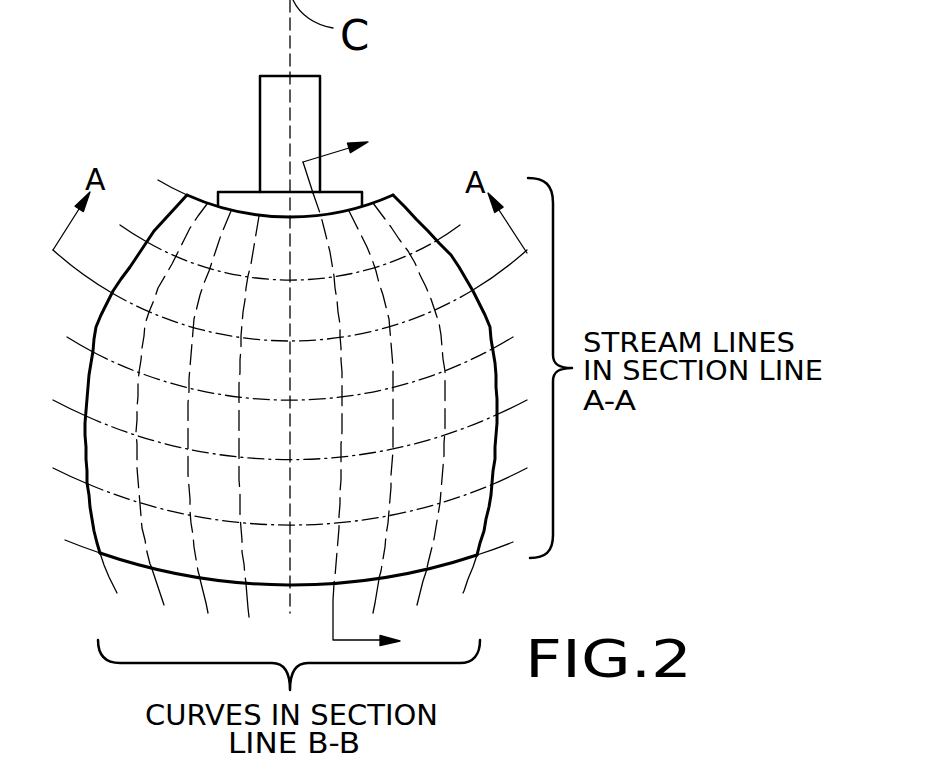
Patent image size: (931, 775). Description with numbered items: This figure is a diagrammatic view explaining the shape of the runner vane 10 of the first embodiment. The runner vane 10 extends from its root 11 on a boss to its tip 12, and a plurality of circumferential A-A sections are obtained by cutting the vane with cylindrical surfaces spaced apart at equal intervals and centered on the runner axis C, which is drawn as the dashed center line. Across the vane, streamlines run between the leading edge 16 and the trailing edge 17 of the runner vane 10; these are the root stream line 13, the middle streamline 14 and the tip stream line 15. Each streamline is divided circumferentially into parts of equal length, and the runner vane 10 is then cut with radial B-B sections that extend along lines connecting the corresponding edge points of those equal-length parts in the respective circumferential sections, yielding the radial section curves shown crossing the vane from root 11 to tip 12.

The runner vane 10 is at (467, 123).
The root 11 is at (380, 190).
The tip 12 is at (452, 566).
The root stream line 13 is at (158, 180).
The middle streamline 14 is at (80, 345).
The tip stream line 15 is at (77, 541).
The leading edge 16 is at (480, 335).
The trailing edge 17 is at (86, 390).